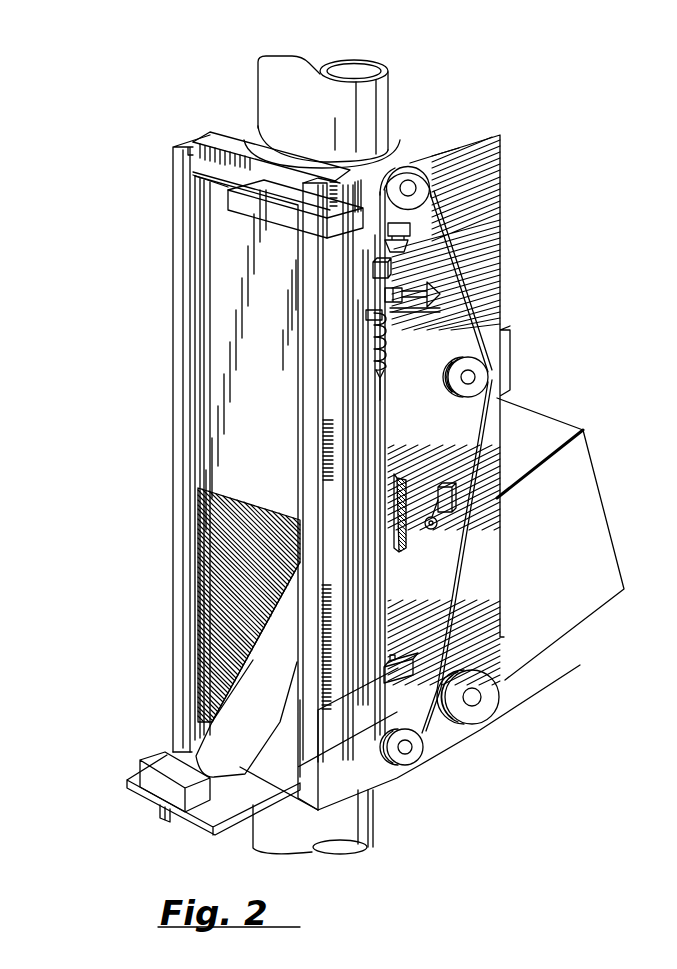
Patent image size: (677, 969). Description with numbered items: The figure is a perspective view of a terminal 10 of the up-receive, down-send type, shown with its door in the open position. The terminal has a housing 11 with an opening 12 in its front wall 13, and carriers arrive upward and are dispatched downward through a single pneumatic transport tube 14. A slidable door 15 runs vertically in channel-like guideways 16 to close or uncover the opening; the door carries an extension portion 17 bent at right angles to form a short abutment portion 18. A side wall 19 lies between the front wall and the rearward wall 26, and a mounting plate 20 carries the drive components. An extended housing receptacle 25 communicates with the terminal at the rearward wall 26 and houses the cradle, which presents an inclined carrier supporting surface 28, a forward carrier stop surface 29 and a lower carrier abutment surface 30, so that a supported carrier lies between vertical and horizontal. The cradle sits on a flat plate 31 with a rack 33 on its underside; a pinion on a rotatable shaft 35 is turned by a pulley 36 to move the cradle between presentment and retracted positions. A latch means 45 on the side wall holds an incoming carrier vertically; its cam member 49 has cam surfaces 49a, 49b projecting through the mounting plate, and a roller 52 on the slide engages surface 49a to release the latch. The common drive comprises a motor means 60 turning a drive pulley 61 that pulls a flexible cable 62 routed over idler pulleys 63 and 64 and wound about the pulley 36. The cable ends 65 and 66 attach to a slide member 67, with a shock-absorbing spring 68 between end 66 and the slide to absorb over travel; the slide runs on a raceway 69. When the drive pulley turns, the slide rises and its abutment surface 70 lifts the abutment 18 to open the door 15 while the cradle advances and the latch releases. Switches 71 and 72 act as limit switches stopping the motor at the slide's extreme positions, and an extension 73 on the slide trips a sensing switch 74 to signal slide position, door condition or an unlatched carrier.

The terminal 10 is at (93, 670).
The terminal housing 11 is at (255, 148).
The opening 12 is at (190, 654).
The front wall 13 is at (178, 601).
The pneumatic transport tube 14 is at (377, 833).
The slidable door 15 is at (296, 493).
The channel-like guideways 16 is at (197, 527).
The extension portion 17 is at (285, 223).
The abutment portion 18 is at (323, 227).
The side wall 19 is at (440, 743).
The mounting plate 20 is at (503, 637).
The extended housing receptacle 25 is at (583, 430).
The rearward wall 26 is at (285, 731).
The inclined carrier supporting surface 28 is at (256, 642).
The carrier stop surface 29 is at (155, 760).
The carrier abutment surface 30 is at (203, 767).
The flat plate 31 is at (208, 828).
The rack 33 is at (160, 815).
The rotatable shaft 35 is at (476, 703).
The pulley 36 is at (483, 673).
The latch means 45 is at (411, 548).
The cam member 49 is at (408, 540).
The cam surface 49a is at (407, 557).
The cam surface 49b is at (405, 493).
The roller 52 is at (408, 313).
The motor means 60 is at (505, 325).
The drive pulley 61 is at (481, 380).
The flexible cable 62 is at (442, 268).
The idler pulley 63 is at (411, 168).
The idler pulley 64 is at (404, 766).
The cable end 65 is at (418, 253).
The cable end 66 is at (385, 377).
The slide member 67 is at (358, 287).
The shock-absorbing spring 68 is at (387, 350).
The raceway 69 is at (348, 467).
The abutment surface 70 is at (367, 238).
The switch 71 is at (414, 232).
The switch 72 is at (397, 688).
The extension 73 is at (436, 292).
The sensing switch 74 is at (455, 508).